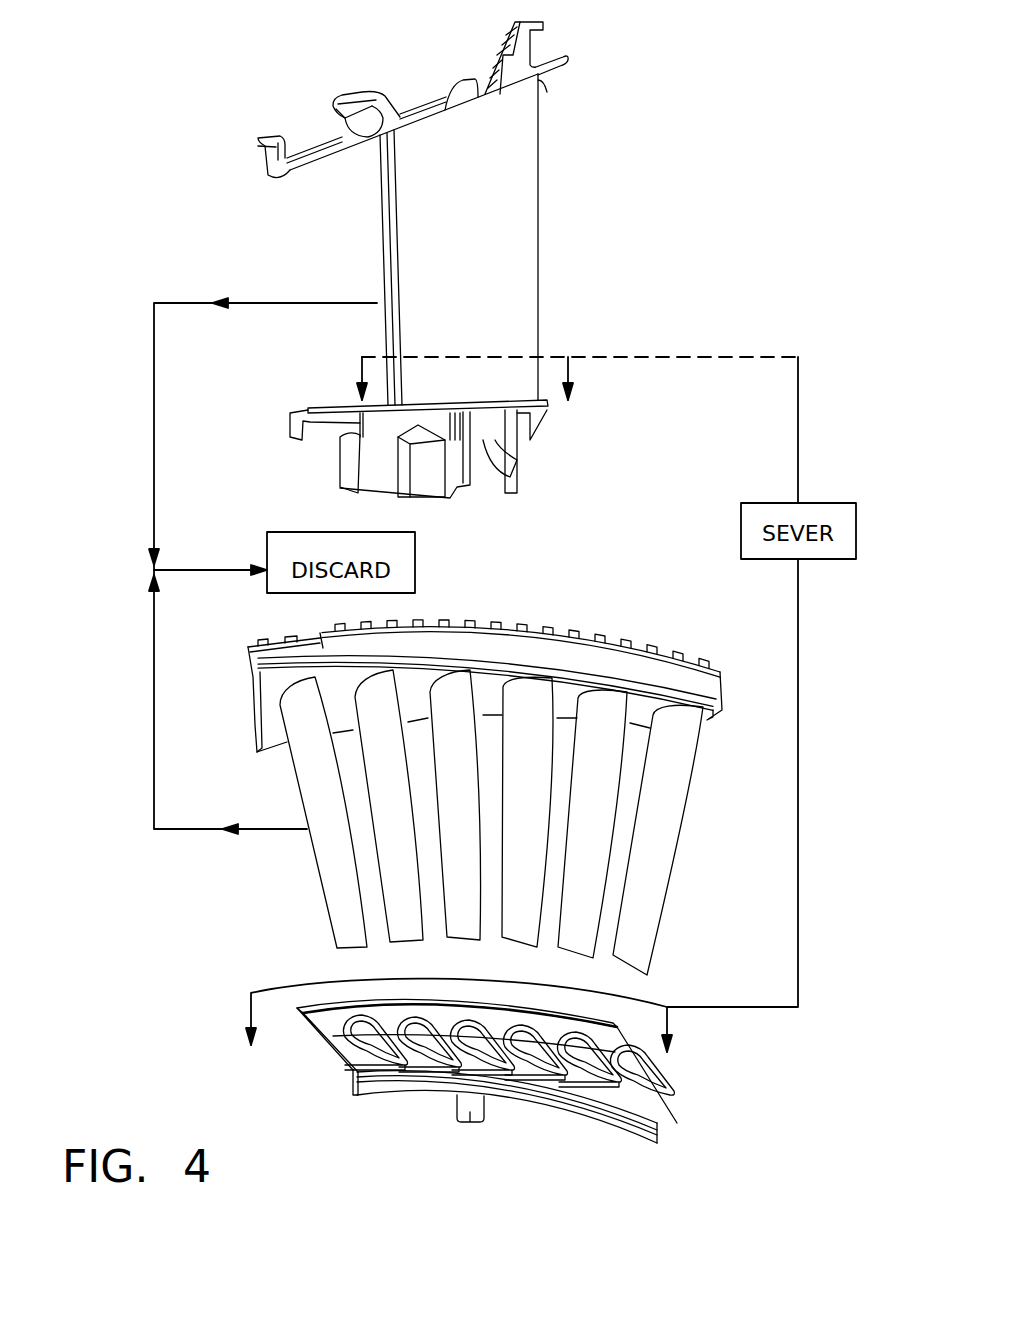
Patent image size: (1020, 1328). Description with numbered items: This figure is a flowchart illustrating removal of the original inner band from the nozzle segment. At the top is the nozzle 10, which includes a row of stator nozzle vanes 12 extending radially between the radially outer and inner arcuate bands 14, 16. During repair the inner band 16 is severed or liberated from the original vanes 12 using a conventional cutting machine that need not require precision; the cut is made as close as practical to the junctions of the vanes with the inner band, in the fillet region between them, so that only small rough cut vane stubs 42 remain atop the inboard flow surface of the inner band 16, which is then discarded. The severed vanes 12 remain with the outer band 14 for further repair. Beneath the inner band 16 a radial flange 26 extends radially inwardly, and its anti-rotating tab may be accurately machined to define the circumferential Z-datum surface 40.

The nozzle 10 is at (568, 73).
The stator nozzle vanes 12 is at (456, 268).
The radially outer arcuate band 14 is at (307, 178).
The radially inner arcuate band 16 is at (340, 408).
The radial flange 26 is at (607, 1132).
The circumferential Z-datum surface 40 is at (470, 1117).
The rough cut vane stubs 42 is at (347, 1037).